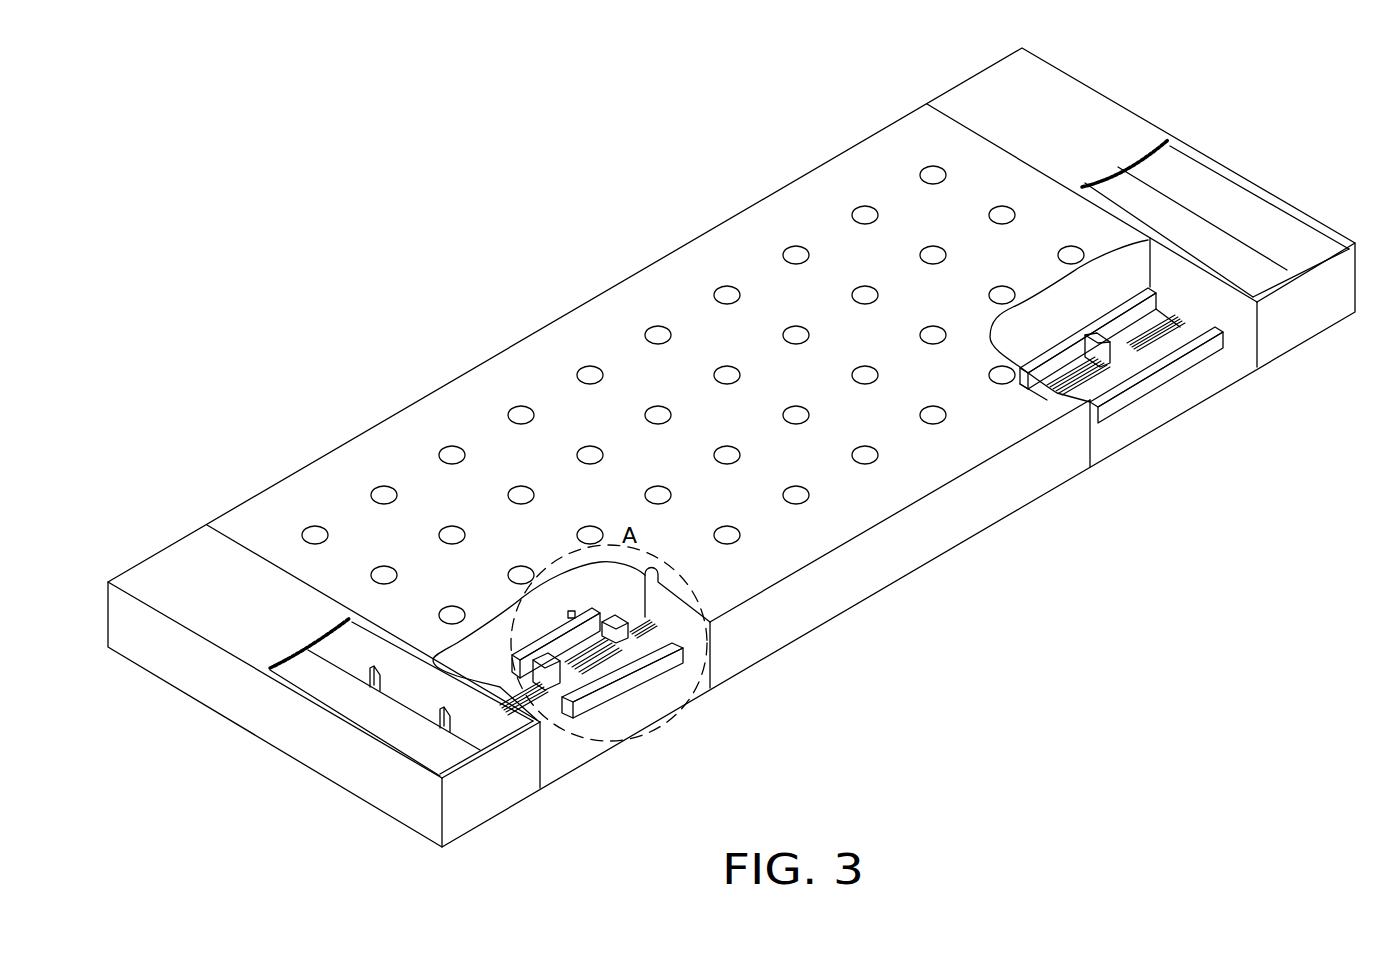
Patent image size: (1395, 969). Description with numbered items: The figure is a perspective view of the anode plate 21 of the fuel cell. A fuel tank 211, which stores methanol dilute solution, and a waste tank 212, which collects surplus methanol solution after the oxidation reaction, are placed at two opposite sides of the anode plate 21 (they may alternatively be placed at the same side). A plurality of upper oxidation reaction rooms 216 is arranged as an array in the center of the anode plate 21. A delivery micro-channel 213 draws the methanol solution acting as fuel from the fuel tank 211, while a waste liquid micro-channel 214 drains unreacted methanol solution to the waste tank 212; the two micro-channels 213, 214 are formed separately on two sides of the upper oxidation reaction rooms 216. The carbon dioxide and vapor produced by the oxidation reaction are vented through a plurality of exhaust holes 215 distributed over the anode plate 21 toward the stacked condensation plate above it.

The anode plate 21 is at (505, 215).
The fuel tank 211 is at (392, 722).
The waste tank 212 is at (1223, 203).
The delivery micro-channel 213 is at (500, 687).
The waste liquid micro-channel 214 is at (653, 672).
The exhaust holes 215 is at (665, 572).
The upper oxidation reaction rooms 216 is at (605, 683).